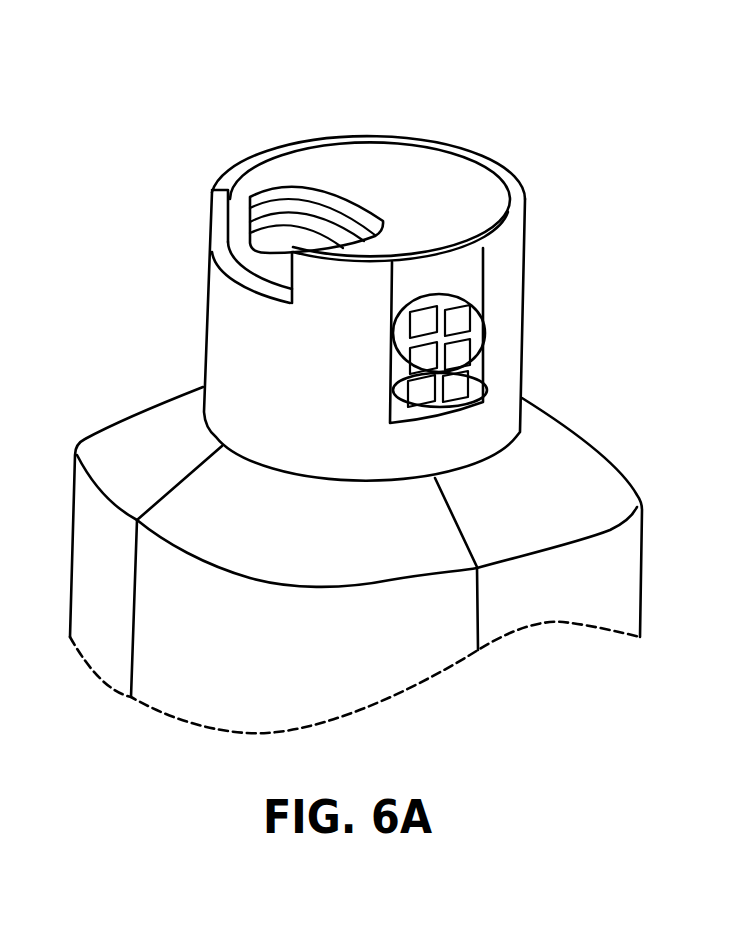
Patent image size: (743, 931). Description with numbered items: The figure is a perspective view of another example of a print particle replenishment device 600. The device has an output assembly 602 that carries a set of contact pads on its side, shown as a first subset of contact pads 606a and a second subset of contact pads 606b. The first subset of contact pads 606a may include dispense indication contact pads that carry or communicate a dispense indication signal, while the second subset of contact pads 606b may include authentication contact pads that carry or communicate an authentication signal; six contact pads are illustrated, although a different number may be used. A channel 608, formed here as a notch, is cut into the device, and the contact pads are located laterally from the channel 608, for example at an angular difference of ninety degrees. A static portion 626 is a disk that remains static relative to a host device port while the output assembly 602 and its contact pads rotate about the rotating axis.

The print particle replenishment device 600 is at (195, 98).
The output assembly 602 is at (178, 140).
The channel 608 is at (278, 178).
The static portion 626 is at (451, 178).
The second subset of contact pads 606b is at (483, 332).
The first subset of contact pads 606a is at (483, 385).